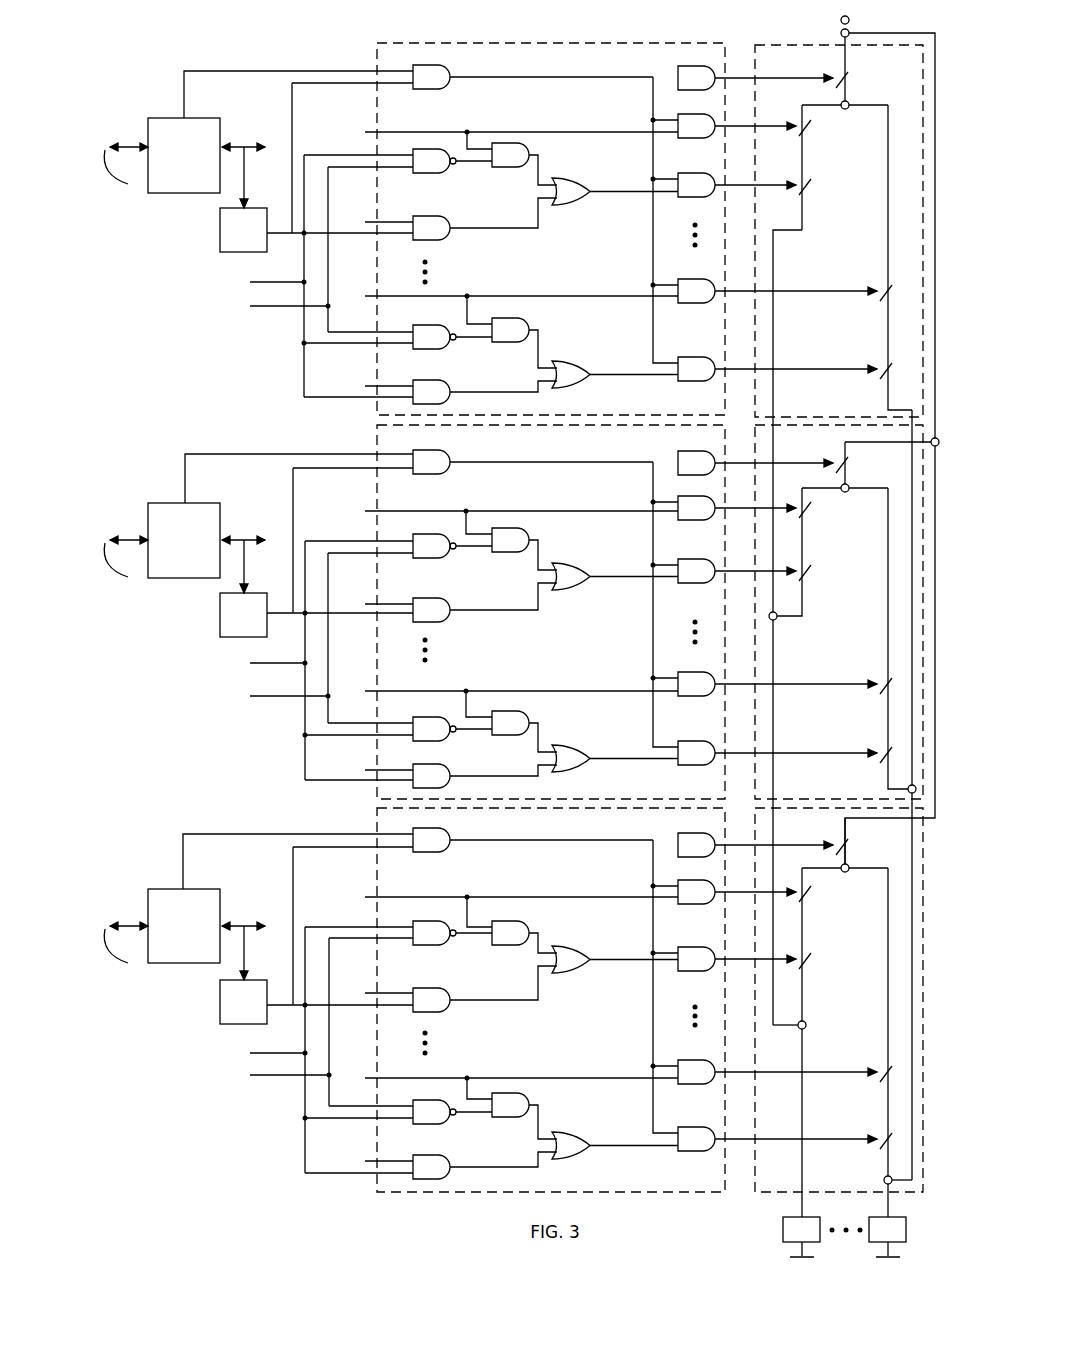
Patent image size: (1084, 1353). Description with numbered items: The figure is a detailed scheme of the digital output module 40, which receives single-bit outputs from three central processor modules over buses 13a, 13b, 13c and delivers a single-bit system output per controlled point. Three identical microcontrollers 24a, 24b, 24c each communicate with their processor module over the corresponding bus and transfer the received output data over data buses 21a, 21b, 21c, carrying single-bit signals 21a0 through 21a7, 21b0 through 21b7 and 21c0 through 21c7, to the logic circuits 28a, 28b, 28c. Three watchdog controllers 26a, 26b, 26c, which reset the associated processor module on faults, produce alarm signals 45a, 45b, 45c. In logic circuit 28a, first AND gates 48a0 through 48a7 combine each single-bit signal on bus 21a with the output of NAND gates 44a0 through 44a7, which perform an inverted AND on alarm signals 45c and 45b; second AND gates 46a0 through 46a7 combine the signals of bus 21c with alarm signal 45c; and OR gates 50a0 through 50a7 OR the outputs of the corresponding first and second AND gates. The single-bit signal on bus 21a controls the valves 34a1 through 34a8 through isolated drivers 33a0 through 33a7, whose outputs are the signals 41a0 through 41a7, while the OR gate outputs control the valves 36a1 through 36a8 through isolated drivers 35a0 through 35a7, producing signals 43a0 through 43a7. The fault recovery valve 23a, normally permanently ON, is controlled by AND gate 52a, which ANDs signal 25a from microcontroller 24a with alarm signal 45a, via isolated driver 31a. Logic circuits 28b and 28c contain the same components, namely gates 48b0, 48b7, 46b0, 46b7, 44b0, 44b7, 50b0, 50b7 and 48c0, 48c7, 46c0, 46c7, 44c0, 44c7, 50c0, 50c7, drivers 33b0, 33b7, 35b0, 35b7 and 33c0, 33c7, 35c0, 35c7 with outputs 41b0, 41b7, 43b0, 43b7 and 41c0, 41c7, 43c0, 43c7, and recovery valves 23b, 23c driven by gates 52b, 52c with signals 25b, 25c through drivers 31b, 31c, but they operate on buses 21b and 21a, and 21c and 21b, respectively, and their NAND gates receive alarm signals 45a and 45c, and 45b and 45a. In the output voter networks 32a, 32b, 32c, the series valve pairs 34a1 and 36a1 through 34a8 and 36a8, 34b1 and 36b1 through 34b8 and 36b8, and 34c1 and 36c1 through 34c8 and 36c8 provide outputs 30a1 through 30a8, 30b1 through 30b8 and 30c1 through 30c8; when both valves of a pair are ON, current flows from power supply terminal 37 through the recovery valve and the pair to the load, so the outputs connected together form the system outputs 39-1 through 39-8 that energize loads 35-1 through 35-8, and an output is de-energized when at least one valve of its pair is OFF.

The bus 13a is at (133, 162).
The bus 13b is at (133, 555).
The bus 13c is at (133, 941).
The data bus 21a is at (255, 150).
The data bus 21b is at (255, 543).
The data bus 21c is at (255, 929).
The single-bit signal 21a0 is at (440, 131).
The single-bit signal 21a7 is at (414, 295).
The single-bit signal 21b0 is at (440, 510).
The single-bit signal 21b7 is at (420, 690).
The single-bit signal 21c0 is at (381, 222).
The single-bit signal 21c7 is at (380, 386).
The fault recovery valve 23a is at (850, 82).
The fault recovery valve 23b is at (850, 468).
The fault recovery valve 23c is at (850, 850).
The microcontroller 24a is at (168, 118).
The microcontroller 24b is at (168, 503).
The microcontroller 24c is at (168, 889).
The signal 25a is at (255, 71).
The signal 25b is at (257, 454).
The signal 25c is at (262, 834).
The watchdog controller 26a is at (220, 232).
The watchdog controller 26b is at (220, 620).
The watchdog controller 26c is at (220, 1010).
The logic circuit 28a is at (370, 64).
The logic circuit 28b is at (370, 447).
The logic circuit 28c is at (551, 1000).
The output 30a1 is at (775, 398).
The output 30a8 is at (890, 406).
The output 30b1 is at (803, 608).
The output 30b8 is at (886, 789).
The output 30c1 is at (804, 996).
The output 30c8 is at (882, 1168).
The isolated driver 31a is at (678, 70).
The isolated driver 31b is at (678, 455).
The isolated driver 31c is at (678, 835).
The output voter network 32a is at (780, 44).
The output voter network 32b is at (755, 440).
The output voter network 32c is at (755, 824).
The isolated driver 33a0 is at (709, 138).
The isolated driver 33a7 is at (709, 303).
The isolated driver 33b0 is at (709, 520).
The isolated driver 33b7 is at (709, 697).
The isolated driver 33c0 is at (709, 904).
The isolated driver 33c7 is at (709, 1084).
The valve 34a1 is at (806, 129).
The valve 34a8 is at (878, 289).
The valve 34b1 is at (806, 511).
The valve 34b8 is at (892, 682).
The valve 34c1 is at (806, 895).
The valve 34c8 is at (880, 1042).
The isolated driver 35a0 is at (709, 198).
The isolated driver 35a7 is at (709, 381).
The isolated driver 35b0 is at (709, 583).
The isolated driver 35b7 is at (709, 765).
The isolated driver 35c0 is at (709, 971).
The isolated driver 35c7 is at (709, 1151).
The load 35-1 is at (783, 1232).
The load 35-8 is at (906, 1232).
The valve 36a1 is at (808, 189).
The valve 36a8 is at (884, 367).
The valve 36b1 is at (808, 575).
The valve 36b8 is at (892, 754).
The valve 36c1 is at (808, 963).
The valve 36c8 is at (880, 1141).
The power supply terminal 37 is at (852, 21).
The system output 39-1 is at (800, 1206).
The system output 39-8 is at (884, 1208).
The digital output module 40 is at (770, 25).
The single-bit output signal 41a0 is at (772, 124).
The single-bit output signal 41a7 is at (785, 293).
The single-bit output signal 41b0 is at (780, 506).
The single-bit output signal 41b7 is at (856, 683).
The single-bit output signal 41c0 is at (781, 890).
The single-bit output signal 41c7 is at (868, 1070).
The single-bit output signal 43a0 is at (772, 184).
The single-bit output signal 43a7 is at (788, 371).
The single-bit output signal 43b0 is at (790, 569).
The single-bit output signal 43b7 is at (856, 752).
The single-bit output signal 43c0 is at (790, 957).
The single-bit output signal 43c7 is at (868, 1137).
The NAND gate 44a0 is at (438, 174).
The NAND gate 44a7 is at (440, 352).
The NAND gate 44b0 is at (440, 558).
The NAND gate 44b7 is at (440, 744).
The NAND gate 44c0 is at (440, 940).
The NAND gate 44c7 is at (442, 1126).
The alarm signal 45a is at (292, 98).
The alarm signal 45b is at (362, 168).
The alarm signal 45c is at (336, 152).
The second AND gate 46a0 is at (450, 241).
The second AND gate 46a7 is at (452, 404).
The second AND gate 46b0 is at (450, 622).
The second AND gate 46b7 is at (452, 786).
The second AND gate 46c0 is at (450, 1006).
The second AND gate 46c7 is at (452, 1180).
The first AND gate 48a0 is at (527, 146).
The first AND gate 48a7 is at (527, 322).
The first AND gate 48b0 is at (527, 531).
The first AND gate 48b7 is at (527, 716).
The first AND gate 48c0 is at (527, 924).
The first AND gate 48c7 is at (527, 1096).
The OR gate 50a0 is at (578, 204).
The OR gate 50a7 is at (581, 388).
The OR gate 50b0 is at (580, 590).
The OR gate 50b7 is at (581, 772).
The OR gate 50c0 is at (580, 972).
The OR gate 50c7 is at (581, 1160).
The AND gate 52a is at (452, 86).
The AND gate 52b is at (452, 470).
The AND gate 52c is at (452, 849).